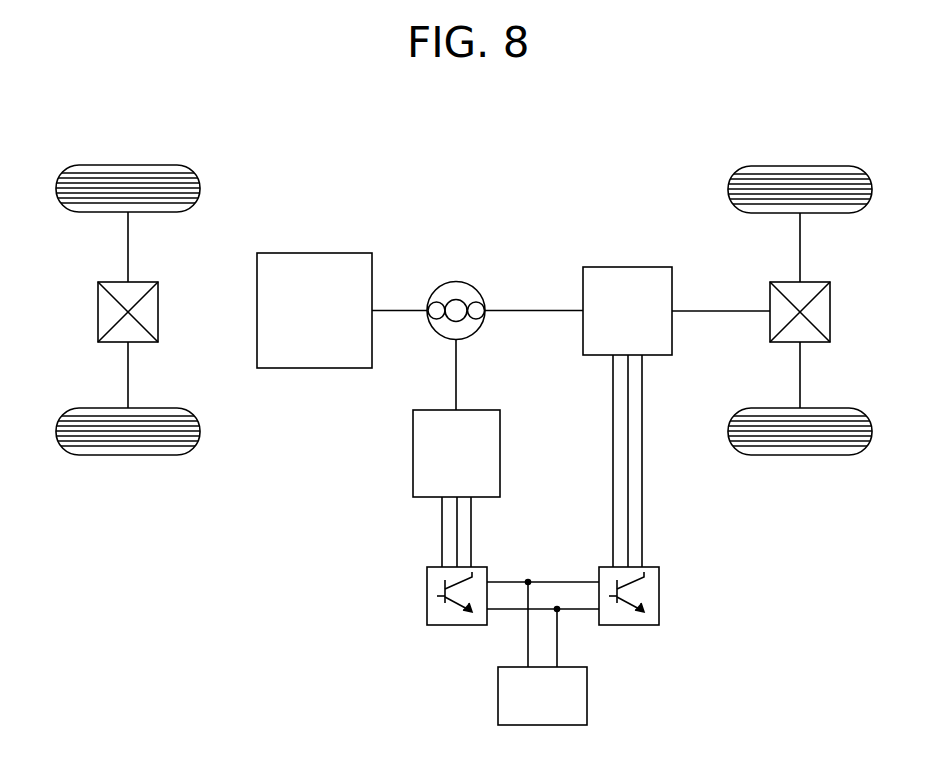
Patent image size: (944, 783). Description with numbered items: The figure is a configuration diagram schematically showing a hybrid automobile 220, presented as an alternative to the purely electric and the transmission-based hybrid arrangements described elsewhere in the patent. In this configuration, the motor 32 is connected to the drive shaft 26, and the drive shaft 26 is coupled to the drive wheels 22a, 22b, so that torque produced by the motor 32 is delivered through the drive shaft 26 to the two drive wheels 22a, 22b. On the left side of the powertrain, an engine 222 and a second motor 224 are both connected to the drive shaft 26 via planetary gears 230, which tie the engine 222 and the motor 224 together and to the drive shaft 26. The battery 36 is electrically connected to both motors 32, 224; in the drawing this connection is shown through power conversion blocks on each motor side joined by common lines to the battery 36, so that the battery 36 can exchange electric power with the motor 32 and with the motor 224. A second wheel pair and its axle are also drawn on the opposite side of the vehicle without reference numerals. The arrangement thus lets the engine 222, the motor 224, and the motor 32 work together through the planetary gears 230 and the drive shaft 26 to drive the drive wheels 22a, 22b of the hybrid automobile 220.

The hybrid automobile 220 is at (584, 156).
The engine 222 is at (313, 252).
The motor 224 is at (424, 409).
The planetary gears 230 is at (457, 281).
The motor 32 is at (627, 266).
The drive shaft 26 is at (700, 309).
The drive wheel 22a is at (800, 165).
The drive wheel 22b is at (799, 457).
The battery 36 is at (498, 695).